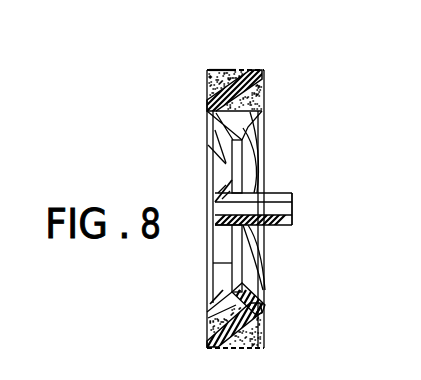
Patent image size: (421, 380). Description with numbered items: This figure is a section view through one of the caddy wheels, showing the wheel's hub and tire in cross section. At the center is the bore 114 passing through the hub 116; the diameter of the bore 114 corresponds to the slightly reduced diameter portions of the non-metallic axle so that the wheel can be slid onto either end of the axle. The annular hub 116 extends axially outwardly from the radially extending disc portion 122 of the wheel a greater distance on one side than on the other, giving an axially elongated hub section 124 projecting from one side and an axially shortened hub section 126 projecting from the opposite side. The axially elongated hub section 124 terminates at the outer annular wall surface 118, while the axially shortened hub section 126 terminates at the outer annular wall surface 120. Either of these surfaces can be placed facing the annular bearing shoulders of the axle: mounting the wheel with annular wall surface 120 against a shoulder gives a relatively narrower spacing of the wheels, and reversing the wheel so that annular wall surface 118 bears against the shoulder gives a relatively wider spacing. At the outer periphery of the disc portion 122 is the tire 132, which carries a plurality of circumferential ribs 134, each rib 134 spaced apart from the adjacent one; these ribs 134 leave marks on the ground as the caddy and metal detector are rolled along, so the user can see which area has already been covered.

The bore 114 is at (292, 210).
The hub 116 is at (273, 193).
The outer annular wall surface 118 is at (295, 232).
The outer annular wall surface 120 is at (222, 224).
The disc portion 122 is at (208, 145).
The axially elongated hub section 124 is at (272, 228).
The axially shortened hub section 126 is at (230, 227).
The tire 132 is at (264, 82).
The circumferential rib 134 is at (233, 69).